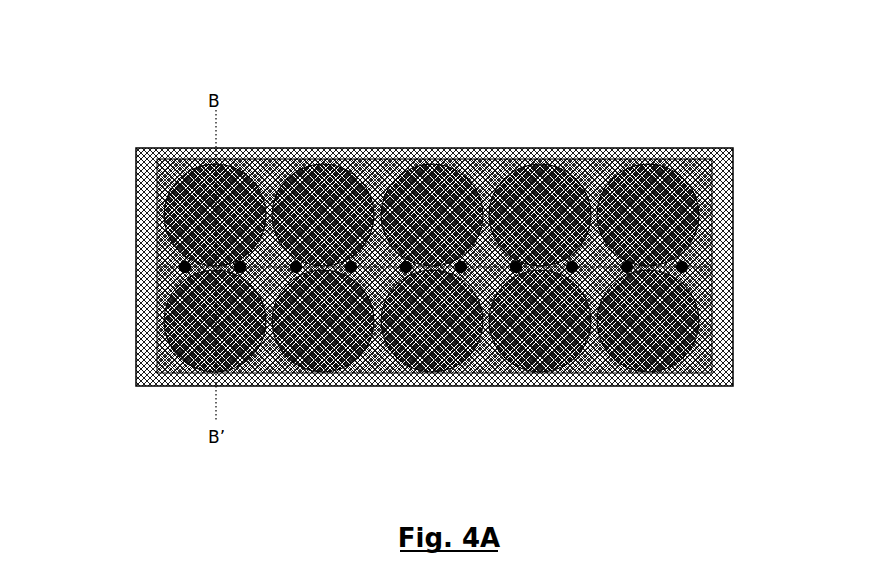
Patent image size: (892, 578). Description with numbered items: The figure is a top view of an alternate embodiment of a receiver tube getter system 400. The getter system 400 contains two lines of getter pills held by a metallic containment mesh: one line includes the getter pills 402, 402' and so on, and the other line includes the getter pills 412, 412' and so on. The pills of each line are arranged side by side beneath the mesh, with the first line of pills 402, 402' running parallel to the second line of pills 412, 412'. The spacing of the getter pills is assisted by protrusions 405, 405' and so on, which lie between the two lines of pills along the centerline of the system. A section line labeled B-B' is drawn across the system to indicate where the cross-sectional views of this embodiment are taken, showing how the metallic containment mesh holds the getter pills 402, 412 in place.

The getter system 400 is at (718, 103).
The getter pill 402 is at (171, 334).
The getter pill 402' is at (326, 370).
The protrusion 405 is at (115, 264).
The protrusion 405' is at (248, 157).
The getter pill 412 is at (169, 200).
The getter pill 412' is at (334, 173).